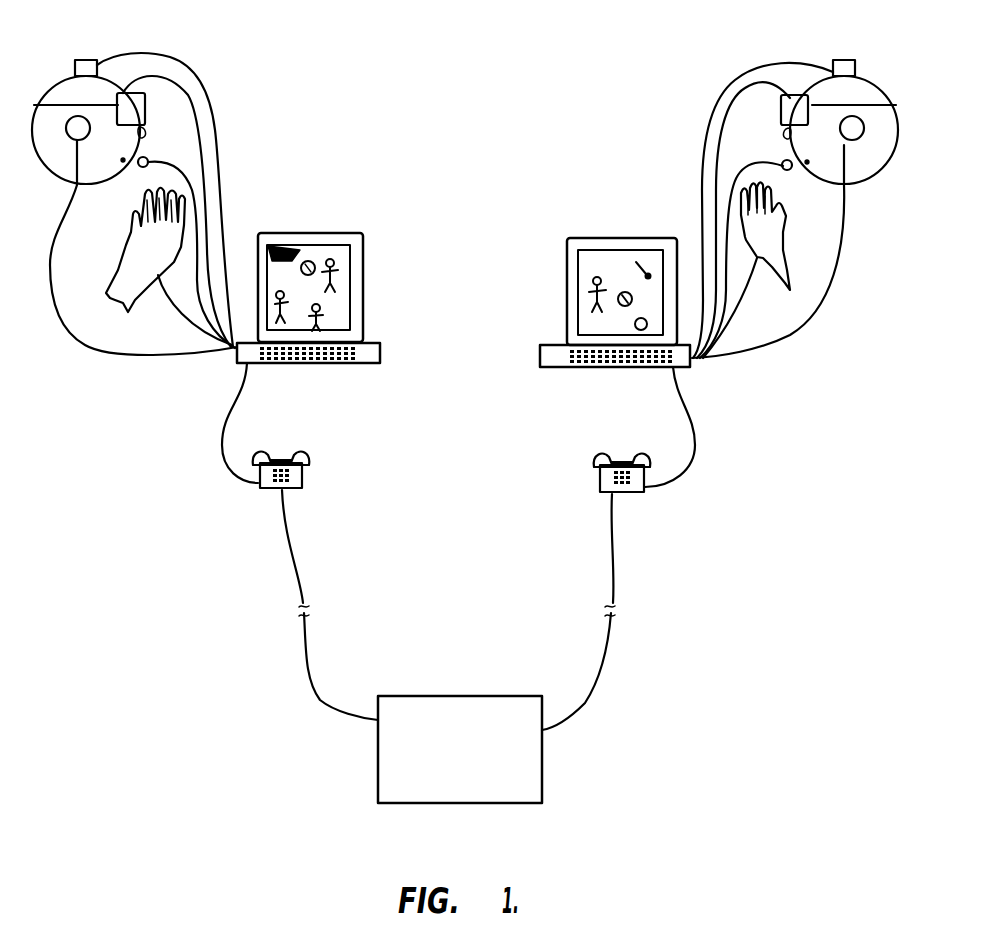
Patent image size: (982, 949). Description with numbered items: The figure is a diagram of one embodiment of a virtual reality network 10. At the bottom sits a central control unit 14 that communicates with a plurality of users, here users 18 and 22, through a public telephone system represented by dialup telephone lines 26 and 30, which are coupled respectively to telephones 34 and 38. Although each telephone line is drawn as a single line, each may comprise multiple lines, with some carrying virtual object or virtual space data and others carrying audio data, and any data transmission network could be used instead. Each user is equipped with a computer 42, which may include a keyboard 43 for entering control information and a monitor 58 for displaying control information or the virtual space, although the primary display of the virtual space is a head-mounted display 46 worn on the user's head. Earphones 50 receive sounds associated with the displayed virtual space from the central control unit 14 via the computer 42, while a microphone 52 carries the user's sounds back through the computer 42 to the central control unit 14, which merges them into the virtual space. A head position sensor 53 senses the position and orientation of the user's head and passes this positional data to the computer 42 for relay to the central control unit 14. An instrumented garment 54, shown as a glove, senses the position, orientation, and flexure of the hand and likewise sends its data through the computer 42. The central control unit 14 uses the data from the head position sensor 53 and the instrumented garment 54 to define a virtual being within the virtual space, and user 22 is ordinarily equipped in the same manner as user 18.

The virtual reality network 10 is at (463, 93).
The central control unit 14 is at (442, 695).
The user 18 is at (55, 76).
The user 22 is at (871, 88).
The dialup telephone line 26 is at (320, 704).
The dialup telephone line 30 is at (597, 700).
The telephone 34 is at (300, 457).
The telephone 38 is at (610, 457).
The computer 42 is at (333, 282).
The keyboard 43 is at (381, 352).
The head-mounted display 46 is at (147, 114).
The earphones 50 is at (70, 140).
The microphone 52 is at (140, 168).
The head position sensor 53 is at (88, 60).
The instrumented garment 54 is at (130, 240).
The monitor 58 is at (345, 233).